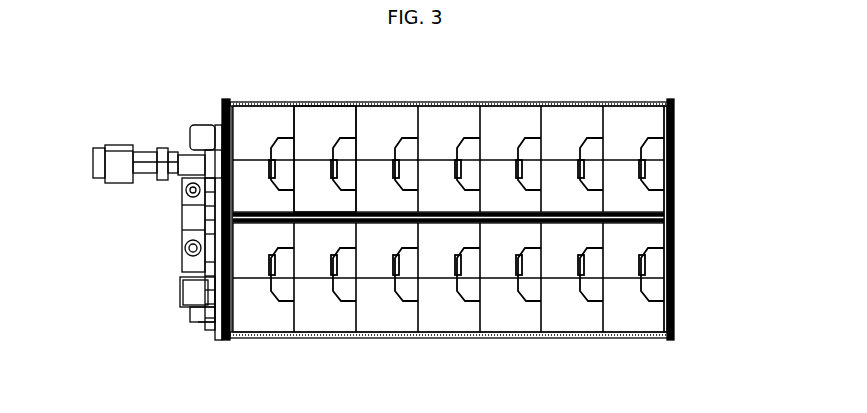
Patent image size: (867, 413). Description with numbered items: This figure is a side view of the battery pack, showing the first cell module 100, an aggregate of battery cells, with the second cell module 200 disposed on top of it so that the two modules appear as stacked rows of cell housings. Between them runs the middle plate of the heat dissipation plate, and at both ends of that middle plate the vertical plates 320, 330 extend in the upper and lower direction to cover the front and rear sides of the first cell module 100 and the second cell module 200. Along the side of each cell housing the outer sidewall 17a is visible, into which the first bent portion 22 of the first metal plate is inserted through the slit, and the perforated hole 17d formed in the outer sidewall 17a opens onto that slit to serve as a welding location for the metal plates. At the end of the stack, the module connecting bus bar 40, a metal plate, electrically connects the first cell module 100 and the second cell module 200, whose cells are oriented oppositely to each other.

The outer sidewall 17a is at (263, 114).
The perforated hole 17d is at (533, 285).
The first bent portion 22 is at (352, 116).
The module connecting bus bar 40 is at (656, 168).
The first cell module 100 is at (443, 333).
The second cell module 200 is at (514, 104).
The vertical plate 320 is at (674, 247).
The vertical plate 330 is at (222, 105).